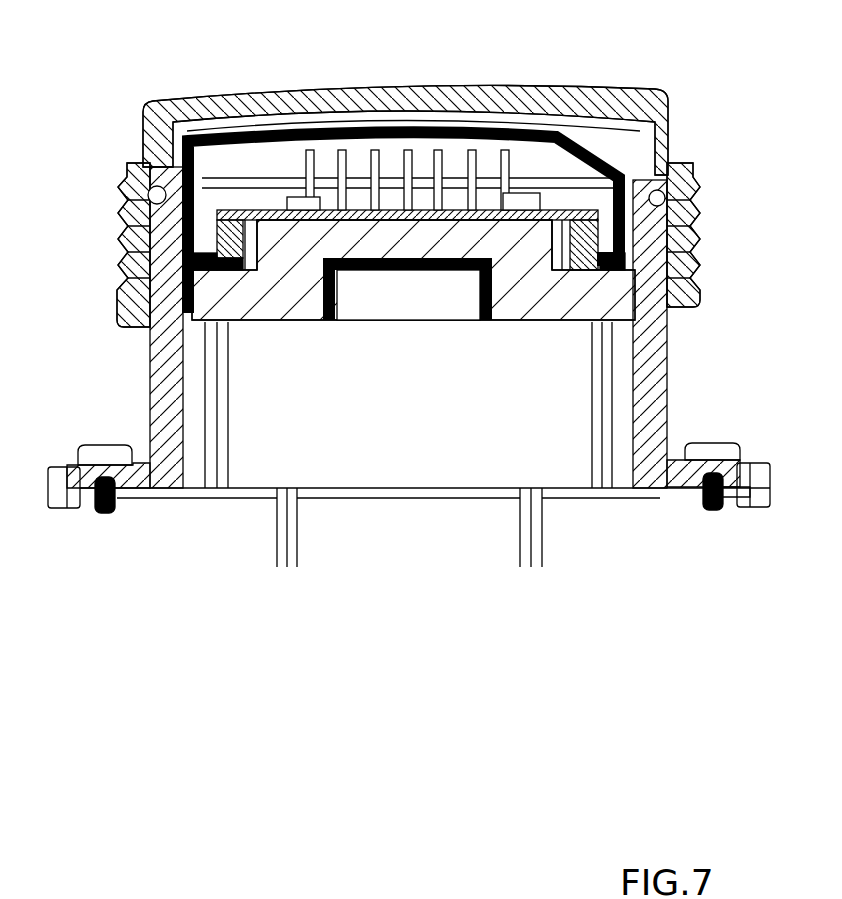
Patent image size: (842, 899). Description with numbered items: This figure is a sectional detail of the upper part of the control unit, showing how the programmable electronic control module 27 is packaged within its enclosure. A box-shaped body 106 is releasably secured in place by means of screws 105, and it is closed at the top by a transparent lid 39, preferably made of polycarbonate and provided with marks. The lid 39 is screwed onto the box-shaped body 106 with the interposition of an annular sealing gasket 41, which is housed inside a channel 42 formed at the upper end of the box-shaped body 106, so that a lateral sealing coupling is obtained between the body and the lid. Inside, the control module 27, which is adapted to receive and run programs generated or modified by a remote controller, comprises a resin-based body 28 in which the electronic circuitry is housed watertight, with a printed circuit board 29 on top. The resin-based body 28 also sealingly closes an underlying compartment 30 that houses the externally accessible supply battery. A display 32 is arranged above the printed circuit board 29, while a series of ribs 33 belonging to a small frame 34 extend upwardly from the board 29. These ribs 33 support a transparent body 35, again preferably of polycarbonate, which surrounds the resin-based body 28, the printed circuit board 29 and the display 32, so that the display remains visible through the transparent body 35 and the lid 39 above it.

The programmable electronic control module 27 is at (413, 295).
The resin-based body 28 is at (243, 270).
The printed circuit board 29 is at (543, 222).
The compartment 30 is at (332, 322).
The display 32 is at (405, 140).
The ribs 33 is at (340, 150).
The small frame 34 is at (290, 166).
The transparent body 35 is at (581, 133).
The transparent lid 39 is at (638, 100).
The annular sealing gasket 41 is at (664, 198).
The channel 42 is at (677, 210).
The screws 105 is at (102, 445).
The box-shaped body 106 is at (665, 373).